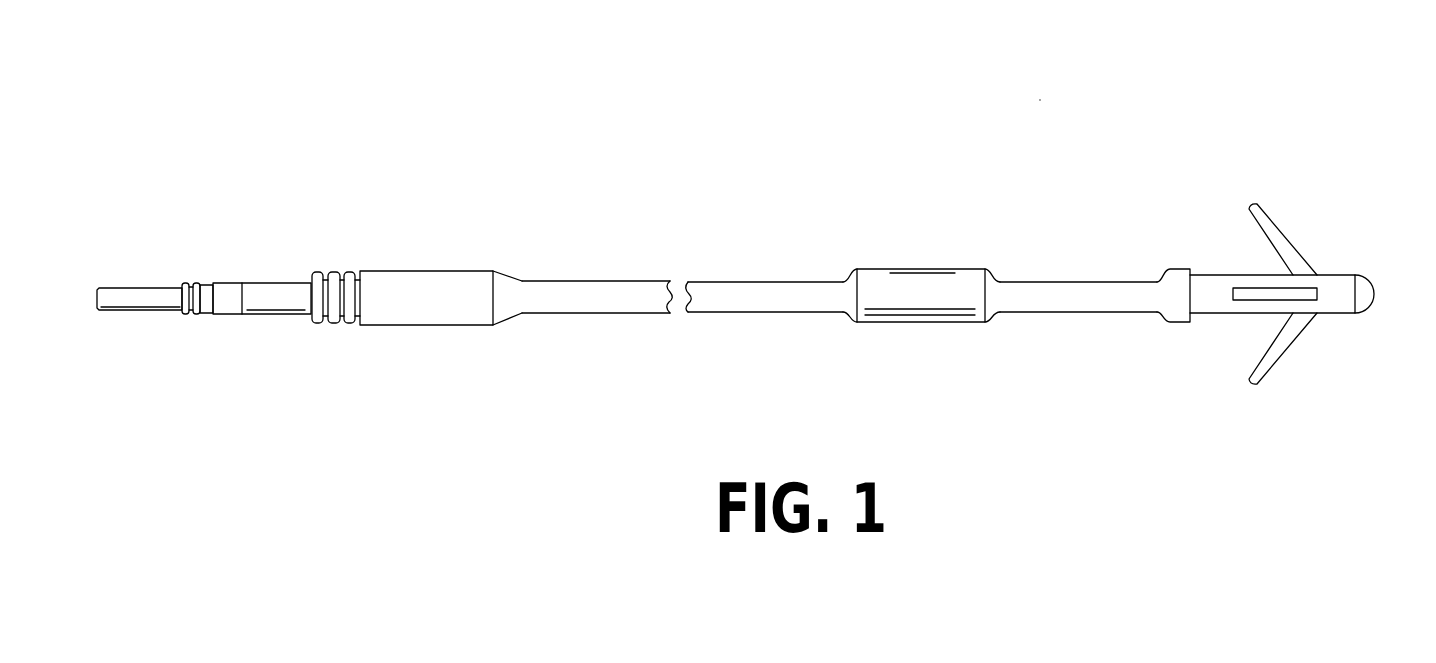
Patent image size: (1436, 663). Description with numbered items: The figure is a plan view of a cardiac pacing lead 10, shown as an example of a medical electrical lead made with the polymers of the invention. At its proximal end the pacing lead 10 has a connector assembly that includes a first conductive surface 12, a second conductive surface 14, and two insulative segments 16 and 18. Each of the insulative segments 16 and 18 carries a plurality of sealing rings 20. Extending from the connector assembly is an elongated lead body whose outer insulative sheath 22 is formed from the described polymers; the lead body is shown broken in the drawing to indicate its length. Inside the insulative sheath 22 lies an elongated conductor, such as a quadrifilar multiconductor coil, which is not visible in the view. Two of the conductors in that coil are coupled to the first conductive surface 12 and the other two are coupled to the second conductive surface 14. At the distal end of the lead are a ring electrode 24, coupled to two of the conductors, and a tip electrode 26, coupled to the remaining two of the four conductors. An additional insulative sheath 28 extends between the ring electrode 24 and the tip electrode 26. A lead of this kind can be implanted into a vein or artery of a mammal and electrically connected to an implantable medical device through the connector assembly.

The pacing lead 10 is at (1035, 97).
The first conductive surface 12 is at (127, 311).
The second conductive surface 14 is at (262, 312).
The insulative segment 16 is at (227, 306).
The insulative segment 18 is at (395, 307).
The sealing rings 20 is at (187, 282).
The outer insulative sheath 22 is at (562, 288).
The ring electrode 24 is at (880, 273).
The tip electrode 26 is at (1367, 298).
The additional insulative sheath 28 is at (1032, 278).